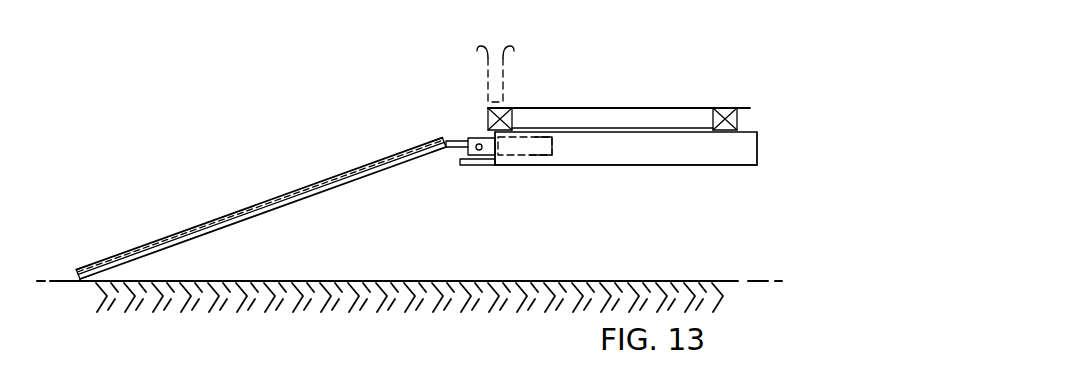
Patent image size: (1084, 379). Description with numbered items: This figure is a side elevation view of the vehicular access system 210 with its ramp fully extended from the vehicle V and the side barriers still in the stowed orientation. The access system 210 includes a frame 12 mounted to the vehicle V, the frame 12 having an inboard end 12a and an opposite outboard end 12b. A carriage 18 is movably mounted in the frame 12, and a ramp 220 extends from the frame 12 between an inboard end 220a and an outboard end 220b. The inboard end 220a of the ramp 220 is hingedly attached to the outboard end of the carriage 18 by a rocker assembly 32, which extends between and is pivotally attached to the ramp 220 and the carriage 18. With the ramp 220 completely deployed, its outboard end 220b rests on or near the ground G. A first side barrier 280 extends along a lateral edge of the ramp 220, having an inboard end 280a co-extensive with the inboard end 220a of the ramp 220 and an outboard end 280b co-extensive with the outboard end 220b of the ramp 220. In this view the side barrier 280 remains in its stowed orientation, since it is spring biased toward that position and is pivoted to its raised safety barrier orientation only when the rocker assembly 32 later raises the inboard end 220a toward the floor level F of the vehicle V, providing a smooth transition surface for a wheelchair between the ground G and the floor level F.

The frame 12 is at (616, 190).
The inboard end 12a is at (756, 166).
The outboard end 12b is at (492, 164).
The carriage 18 is at (521, 154).
The rocker assembly 32 is at (446, 154).
The vehicular access system 210 is at (604, 195).
The ramp 220 is at (258, 209).
The inboard end 220a is at (445, 134).
The outboard end 220b is at (82, 282).
The first side barrier 280 is at (297, 188).
The inboard end 280a is at (444, 133).
The outboard end 280b is at (82, 271).
The floor level F is at (545, 105).
The vehicle V is at (639, 88).
The ground G is at (263, 278).